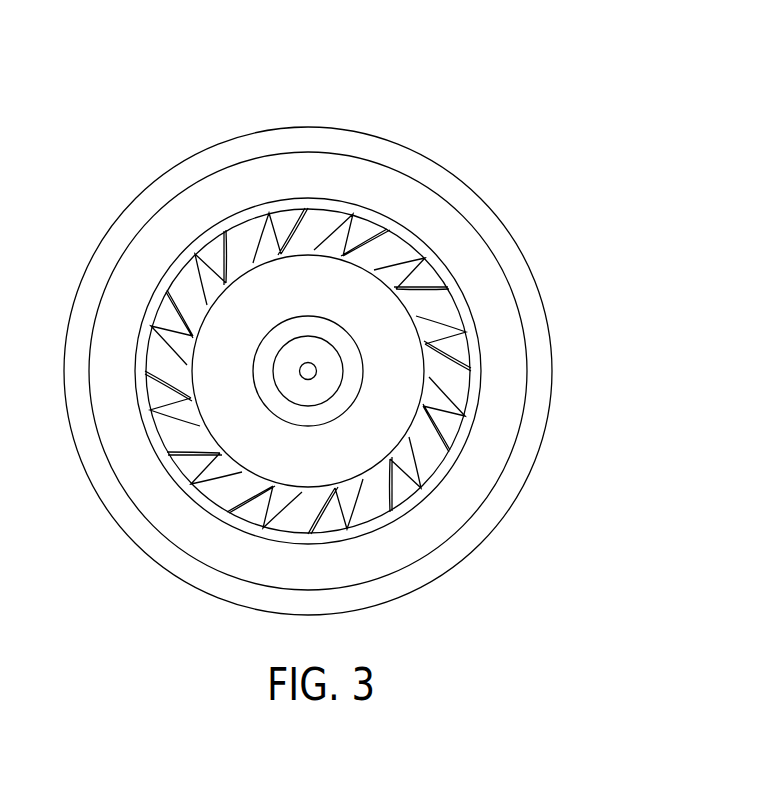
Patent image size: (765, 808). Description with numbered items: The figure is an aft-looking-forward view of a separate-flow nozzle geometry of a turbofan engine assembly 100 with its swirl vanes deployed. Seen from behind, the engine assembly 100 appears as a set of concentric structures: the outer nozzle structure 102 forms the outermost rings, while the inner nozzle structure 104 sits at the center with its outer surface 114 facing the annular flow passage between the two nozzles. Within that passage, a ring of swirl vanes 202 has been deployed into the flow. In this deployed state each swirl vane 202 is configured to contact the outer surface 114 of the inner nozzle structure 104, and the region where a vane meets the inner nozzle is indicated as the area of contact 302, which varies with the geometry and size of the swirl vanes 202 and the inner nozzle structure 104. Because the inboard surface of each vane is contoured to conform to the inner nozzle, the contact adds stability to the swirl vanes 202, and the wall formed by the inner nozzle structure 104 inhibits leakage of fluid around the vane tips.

The engine assembly 100 is at (334, 324).
The outer nozzle structure 102 is at (308, 324).
The inner nozzle structure 104 is at (325, 348).
The outer surface 114 is at (230, 323).
The swirl vanes 202 is at (460, 348).
The area of contact 302 is at (420, 328).